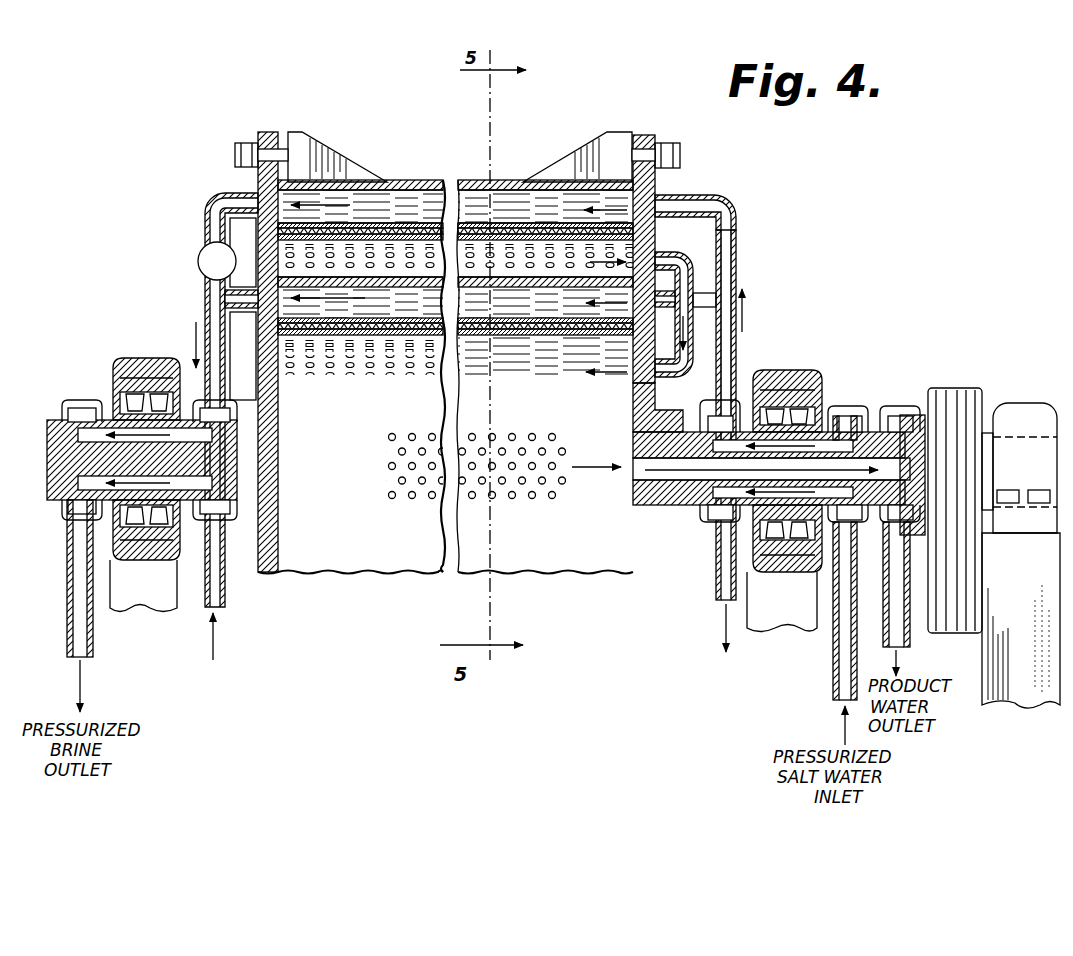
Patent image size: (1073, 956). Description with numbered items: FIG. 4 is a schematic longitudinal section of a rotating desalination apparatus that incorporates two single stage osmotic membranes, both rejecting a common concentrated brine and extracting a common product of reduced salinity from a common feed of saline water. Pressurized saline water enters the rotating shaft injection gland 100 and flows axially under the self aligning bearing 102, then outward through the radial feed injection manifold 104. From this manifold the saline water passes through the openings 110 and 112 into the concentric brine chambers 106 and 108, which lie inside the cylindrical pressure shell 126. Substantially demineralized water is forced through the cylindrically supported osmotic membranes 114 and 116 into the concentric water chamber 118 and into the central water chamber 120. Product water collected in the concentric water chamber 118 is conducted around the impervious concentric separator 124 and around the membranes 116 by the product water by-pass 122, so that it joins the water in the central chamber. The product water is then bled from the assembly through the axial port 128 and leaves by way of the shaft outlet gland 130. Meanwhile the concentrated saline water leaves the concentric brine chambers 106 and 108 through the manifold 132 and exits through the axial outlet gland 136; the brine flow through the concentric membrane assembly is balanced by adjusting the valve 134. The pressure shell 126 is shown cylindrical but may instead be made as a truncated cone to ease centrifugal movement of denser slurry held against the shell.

The rotating shaft injection gland 100 is at (846, 412).
The self aligning bearing 102 is at (146, 360).
The radial feed injection manifold 104 is at (738, 251).
The concentric brine chamber 106 is at (506, 202).
The concentric brine chamber 108 is at (514, 304).
The opening 110 is at (652, 196).
The opening 112 is at (622, 312).
The cylindrically supported osmotic membrane 114 is at (417, 221).
The cylindrically supported osmotic membrane 116 is at (415, 313).
The concentric water chamber 118 is at (545, 209).
The central water chamber 120 is at (378, 566).
The product water by-pass 122 is at (677, 271).
The impervious concentric separator 124 is at (566, 281).
The pressure shell 126 is at (418, 181).
The axial port 128 is at (630, 472).
The shaft outlet gland 130 is at (902, 411).
The manifold 132 is at (205, 304).
The valve 134 is at (197, 260).
The axial outlet gland 136 is at (82, 403).